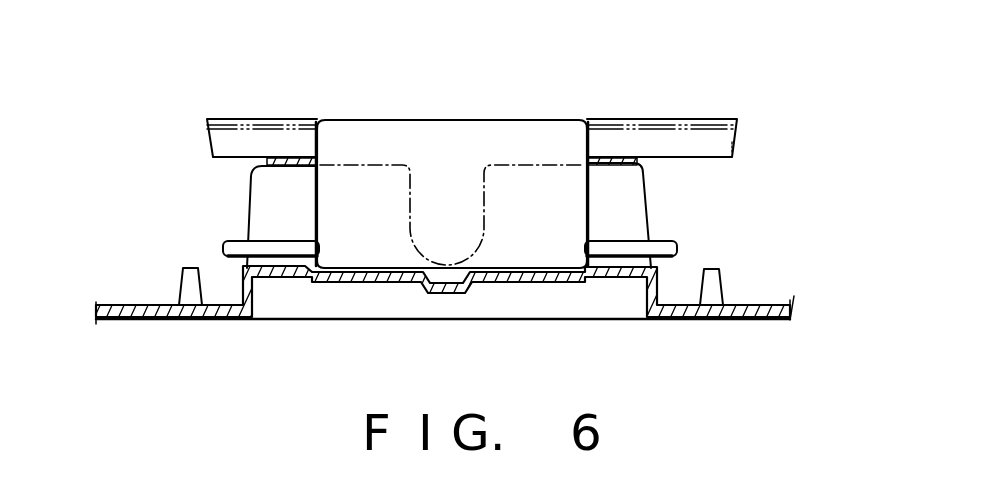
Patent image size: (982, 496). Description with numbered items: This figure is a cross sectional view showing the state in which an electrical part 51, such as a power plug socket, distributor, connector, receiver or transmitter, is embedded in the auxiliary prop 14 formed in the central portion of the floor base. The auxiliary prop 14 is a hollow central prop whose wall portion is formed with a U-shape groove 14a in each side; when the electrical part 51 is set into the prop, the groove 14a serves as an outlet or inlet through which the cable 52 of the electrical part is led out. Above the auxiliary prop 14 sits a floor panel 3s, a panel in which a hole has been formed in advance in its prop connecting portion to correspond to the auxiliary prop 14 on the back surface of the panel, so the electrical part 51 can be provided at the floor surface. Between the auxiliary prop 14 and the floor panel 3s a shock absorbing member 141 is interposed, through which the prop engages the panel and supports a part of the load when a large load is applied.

The electrical part 51 is at (550, 127).
The floor panel 3s is at (733, 153).
The shock absorbing member 141 is at (637, 163).
The U-shape groove 14a is at (636, 224).
The cable 52 is at (680, 250).
The auxiliary prop 14 is at (372, 259).